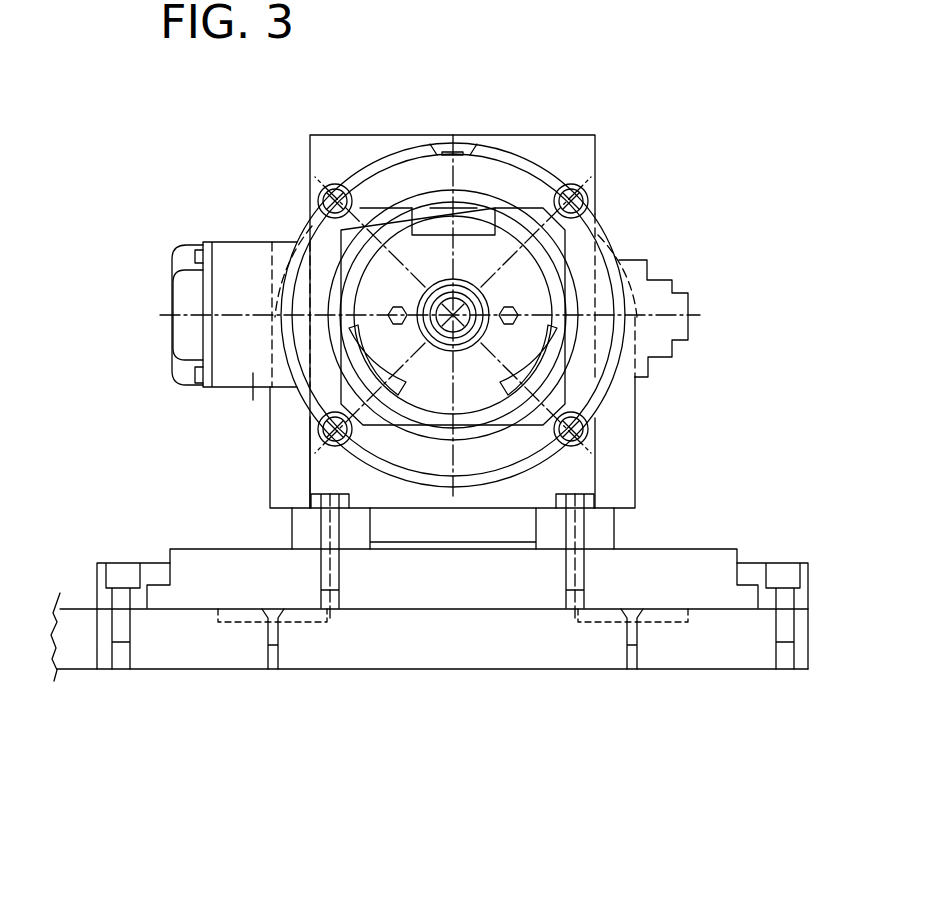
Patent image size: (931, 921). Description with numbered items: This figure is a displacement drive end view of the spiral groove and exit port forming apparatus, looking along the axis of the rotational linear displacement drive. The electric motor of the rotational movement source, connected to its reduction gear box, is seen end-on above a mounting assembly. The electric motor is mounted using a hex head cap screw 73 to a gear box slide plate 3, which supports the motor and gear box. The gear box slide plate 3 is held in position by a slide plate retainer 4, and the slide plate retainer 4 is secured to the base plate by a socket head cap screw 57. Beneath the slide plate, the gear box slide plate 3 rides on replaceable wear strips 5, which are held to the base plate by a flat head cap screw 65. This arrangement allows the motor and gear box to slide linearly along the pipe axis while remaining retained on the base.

The gear box slide plate 3 is at (692, 530).
The slide plate retainer 4 is at (85, 538).
The replaceable wear strips 5 is at (217, 636).
The socket head cap screw 57 is at (790, 545).
The flat head cap screw 65 is at (655, 643).
The hex head cap screw 73 is at (356, 589).